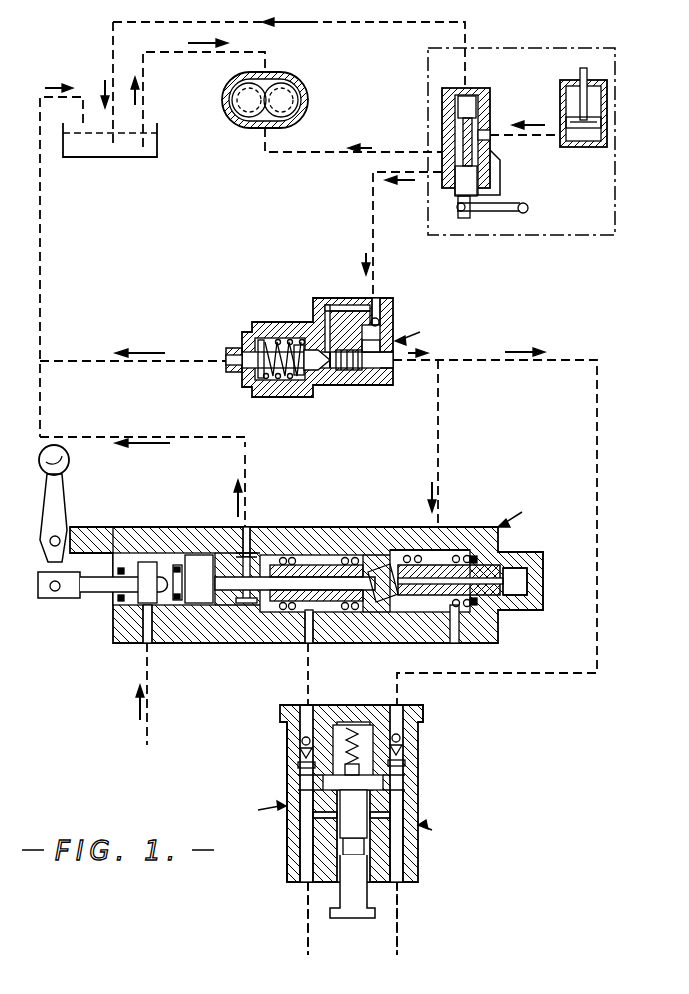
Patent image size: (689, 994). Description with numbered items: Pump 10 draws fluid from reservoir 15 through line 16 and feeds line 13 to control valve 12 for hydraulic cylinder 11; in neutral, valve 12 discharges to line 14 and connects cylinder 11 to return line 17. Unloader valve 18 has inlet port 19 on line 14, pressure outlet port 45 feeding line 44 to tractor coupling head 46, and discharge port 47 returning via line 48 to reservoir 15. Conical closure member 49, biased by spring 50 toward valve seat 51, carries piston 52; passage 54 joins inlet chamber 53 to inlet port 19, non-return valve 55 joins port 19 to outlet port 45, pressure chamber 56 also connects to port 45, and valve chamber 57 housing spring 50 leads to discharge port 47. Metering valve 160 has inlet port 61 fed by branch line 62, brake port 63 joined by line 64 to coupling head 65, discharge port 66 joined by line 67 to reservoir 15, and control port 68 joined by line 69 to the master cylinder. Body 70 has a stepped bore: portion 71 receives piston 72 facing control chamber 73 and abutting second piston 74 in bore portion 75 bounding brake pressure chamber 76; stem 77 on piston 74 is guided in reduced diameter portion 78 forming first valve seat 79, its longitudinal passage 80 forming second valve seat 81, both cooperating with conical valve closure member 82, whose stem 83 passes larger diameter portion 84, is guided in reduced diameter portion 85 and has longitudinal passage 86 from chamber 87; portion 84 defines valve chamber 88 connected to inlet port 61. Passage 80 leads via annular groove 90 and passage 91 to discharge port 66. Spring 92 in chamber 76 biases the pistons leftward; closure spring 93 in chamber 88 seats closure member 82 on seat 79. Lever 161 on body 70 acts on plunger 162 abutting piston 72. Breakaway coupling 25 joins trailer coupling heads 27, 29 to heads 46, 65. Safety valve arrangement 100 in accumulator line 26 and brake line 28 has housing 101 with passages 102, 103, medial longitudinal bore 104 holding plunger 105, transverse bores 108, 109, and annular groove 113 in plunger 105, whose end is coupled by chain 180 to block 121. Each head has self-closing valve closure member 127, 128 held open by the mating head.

The pump 10 is at (308, 100).
The hydraulic cylinder 11 is at (562, 105).
The control valve 12 is at (490, 112).
The line 13 is at (407, 152).
The line 14 is at (374, 195).
The reservoir 15 is at (135, 157).
The line 16 is at (145, 110).
The return line 17 is at (466, 34).
The unloader valve 18 is at (342, 347).
The inlet port 19 is at (378, 300).
The breakaway coupling 25 is at (258, 802).
The accumulator line 26 is at (400, 935).
The trailer coupling head 27 is at (408, 784).
The brake line 28 is at (307, 942).
The trailer coupling head 29 is at (292, 786).
The line 44 is at (530, 675).
The pressure outlet port 45 is at (393, 365).
The tractor coupling head 46 is at (408, 756).
The discharge port 47 is at (230, 358).
The line 48 is at (137, 362).
The conical closure member 49 is at (305, 366).
The spring 50 is at (277, 332).
The valve seat 51 is at (307, 346).
The piston 52 is at (337, 386).
The valve inlet chamber 53 is at (330, 376).
The passage 54 is at (345, 308).
The non-return valve 55 is at (380, 320).
The pressure chamber 56 is at (358, 386).
The valve chamber 57 is at (278, 360).
The inlet port 61 is at (450, 550).
The branch line 62 is at (441, 445).
The brake port 63 is at (311, 645).
The line 64 is at (306, 686).
The tractor coupling head 65 is at (296, 756).
The discharge port 66 is at (249, 542).
The line 67 is at (247, 446).
The control port 68 is at (146, 645).
The line 69 is at (146, 727).
The body 70 is at (330, 535).
The bore portion 71 is at (148, 542).
The piston 72 is at (196, 604).
The control chamber 73 is at (140, 600).
The second piston 74 is at (220, 602).
The bore portion 75 is at (307, 560).
The brake pressure chamber 76 is at (330, 606).
The stem 77 is at (360, 608).
The reduced diameter portion 78 is at (375, 566).
The first valve seat 79 is at (405, 597).
The longitudinal passage 80 is at (262, 592).
The second valve seat 81 is at (367, 600).
The conical valve closure member 82 is at (405, 556).
The stem 83 is at (472, 606).
The larger diameter portion 84 is at (472, 556).
The reduced diameter portion 85 is at (520, 592).
The longitudinal passage 86 is at (512, 568).
The chamber 87 is at (543, 560).
The valve chamber 88 is at (457, 610).
The annular groove 90 is at (238, 546).
The passage 91 is at (272, 552).
The spring 92 is at (346, 558).
The closure spring 93 is at (454, 556).
The safety valve arrangement 100 is at (374, 793).
The housing 101 is at (395, 852).
The passage 102 is at (395, 835).
The passage 103 is at (305, 848).
The medial longitudinal bore 104 is at (345, 880).
The plunger 105 is at (358, 893).
The transverse bore 108 is at (372, 820).
The transverse bore 109 is at (325, 826).
The annular groove 113 is at (360, 850).
The block 121 is at (400, 722).
The valve closure member 127 is at (405, 768).
The valve member 128 is at (405, 742).
The metering valve 160 is at (312, 568).
The lever 161 is at (58, 503).
The plunger 162 is at (95, 595).
The chain 180 is at (353, 722).